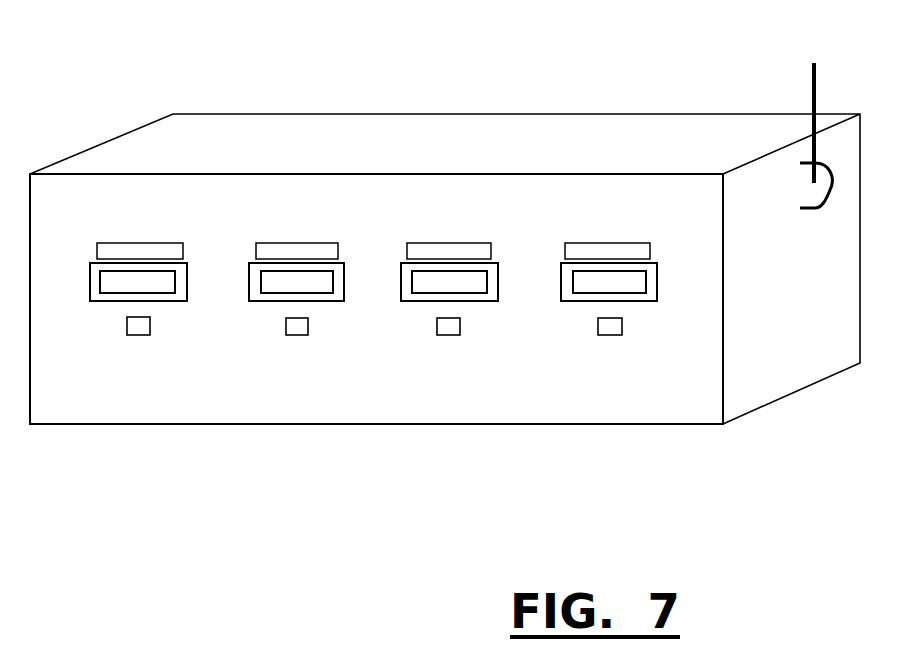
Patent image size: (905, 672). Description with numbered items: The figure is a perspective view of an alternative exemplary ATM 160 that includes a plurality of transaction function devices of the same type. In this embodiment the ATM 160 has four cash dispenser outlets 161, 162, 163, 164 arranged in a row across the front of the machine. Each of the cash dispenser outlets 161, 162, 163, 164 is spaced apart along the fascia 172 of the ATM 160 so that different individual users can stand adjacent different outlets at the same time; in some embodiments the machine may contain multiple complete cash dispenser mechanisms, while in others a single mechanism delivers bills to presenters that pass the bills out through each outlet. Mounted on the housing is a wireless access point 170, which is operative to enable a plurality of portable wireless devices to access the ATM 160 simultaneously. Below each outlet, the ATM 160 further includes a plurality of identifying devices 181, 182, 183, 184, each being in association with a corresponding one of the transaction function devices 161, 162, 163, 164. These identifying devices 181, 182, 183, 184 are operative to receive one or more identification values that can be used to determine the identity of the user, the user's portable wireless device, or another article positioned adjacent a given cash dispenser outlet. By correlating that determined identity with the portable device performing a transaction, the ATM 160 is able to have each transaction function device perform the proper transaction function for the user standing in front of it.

The ATM 160 is at (550, 142).
The cash dispenser outlet 161 is at (90, 268).
The cash dispenser outlet 162 is at (249, 269).
The cash dispenser outlet 163 is at (401, 270).
The cash dispenser outlet 164 is at (561, 272).
The wireless access point 170 is at (806, 208).
The fascia 172 is at (623, 386).
The identifying device 181 is at (127, 330).
The identifying device 182 is at (286, 328).
The identifying device 183 is at (437, 327).
The identifying device 184 is at (598, 328).